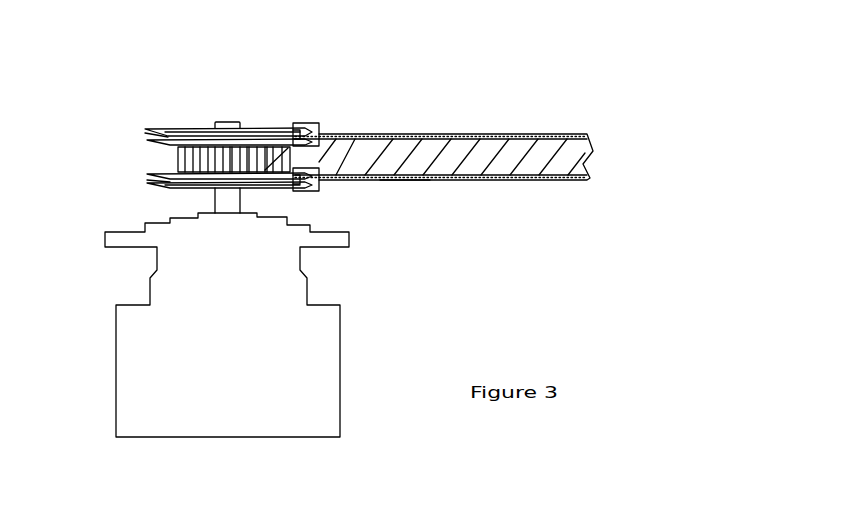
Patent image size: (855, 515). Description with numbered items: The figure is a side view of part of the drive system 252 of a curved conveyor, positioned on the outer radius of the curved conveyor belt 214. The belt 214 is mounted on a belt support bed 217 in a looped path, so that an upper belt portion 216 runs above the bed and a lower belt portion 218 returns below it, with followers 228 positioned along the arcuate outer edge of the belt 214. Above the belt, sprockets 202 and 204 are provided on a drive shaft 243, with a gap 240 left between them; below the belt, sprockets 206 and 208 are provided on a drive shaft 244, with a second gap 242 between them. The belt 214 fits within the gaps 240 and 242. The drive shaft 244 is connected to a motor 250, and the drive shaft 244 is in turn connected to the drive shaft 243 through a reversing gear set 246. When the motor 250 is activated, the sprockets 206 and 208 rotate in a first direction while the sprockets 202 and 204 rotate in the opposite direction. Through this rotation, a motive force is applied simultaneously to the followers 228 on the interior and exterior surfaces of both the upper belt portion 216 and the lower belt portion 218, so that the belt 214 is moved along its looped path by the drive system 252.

The sprocket 202 is at (155, 128).
The sprocket 204 is at (147, 142).
The sprocket 206 is at (148, 173).
The sprocket 208 is at (148, 183).
The conveyor belt 214 is at (487, 135).
The upper belt portion 216 is at (412, 118).
The belt support bed 217 is at (450, 165).
The lower belt portion 218 is at (400, 187).
The followers 228 is at (317, 125).
The gap 240 is at (155, 137).
The second gap 242 is at (152, 178).
The drive shaft 243 is at (240, 125).
The drive shaft 244 is at (228, 197).
The reversing gear set 246 is at (177, 155).
The motor 250 is at (327, 352).
The drive system 252 is at (175, 100).